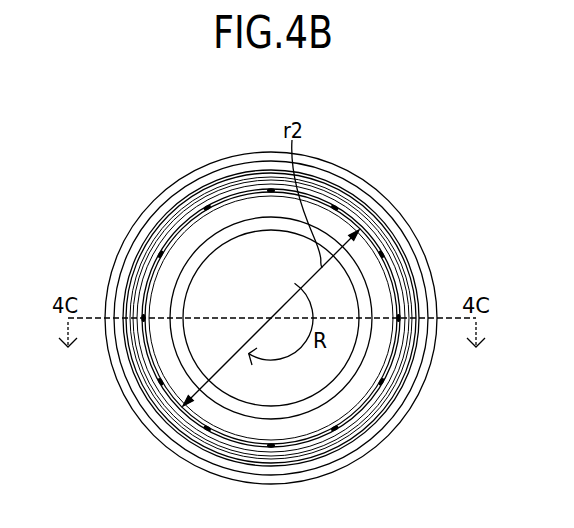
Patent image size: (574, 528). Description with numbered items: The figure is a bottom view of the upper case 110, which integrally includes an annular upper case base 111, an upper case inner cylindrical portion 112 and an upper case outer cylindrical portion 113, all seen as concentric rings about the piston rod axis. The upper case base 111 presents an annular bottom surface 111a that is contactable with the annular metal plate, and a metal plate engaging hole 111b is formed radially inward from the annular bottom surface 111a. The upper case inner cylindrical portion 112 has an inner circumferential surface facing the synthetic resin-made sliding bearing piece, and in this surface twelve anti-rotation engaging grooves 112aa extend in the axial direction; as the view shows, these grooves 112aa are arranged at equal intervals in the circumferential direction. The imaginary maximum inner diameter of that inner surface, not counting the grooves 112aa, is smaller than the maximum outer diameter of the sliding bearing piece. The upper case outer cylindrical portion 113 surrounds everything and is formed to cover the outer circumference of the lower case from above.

The upper case 110 is at (124, 189).
The upper case base 111 is at (337, 408).
The annular bottom surface 111a is at (370, 372).
The metal plate engaging hole 111b is at (353, 305).
The upper case inner cylindrical portion 112 is at (402, 343).
The anti-rotation engaging grooves 112aa is at (379, 254).
The upper case outer cylindrical portion 113 is at (367, 187).